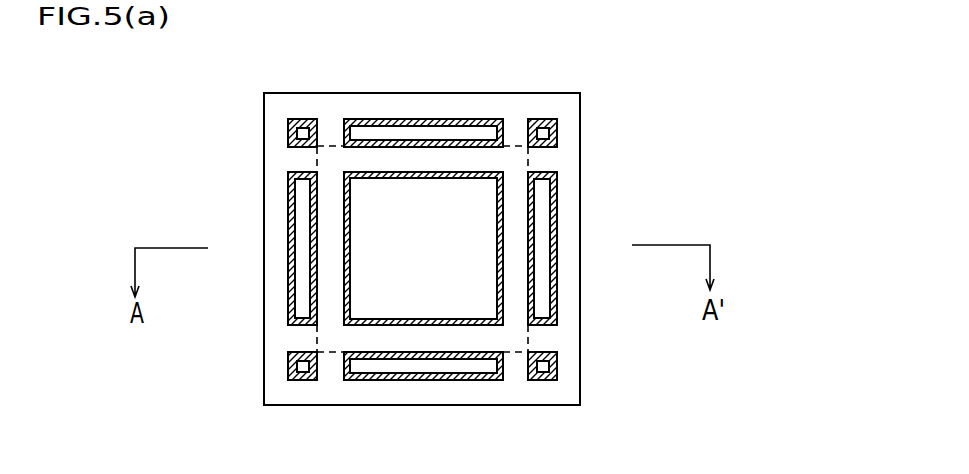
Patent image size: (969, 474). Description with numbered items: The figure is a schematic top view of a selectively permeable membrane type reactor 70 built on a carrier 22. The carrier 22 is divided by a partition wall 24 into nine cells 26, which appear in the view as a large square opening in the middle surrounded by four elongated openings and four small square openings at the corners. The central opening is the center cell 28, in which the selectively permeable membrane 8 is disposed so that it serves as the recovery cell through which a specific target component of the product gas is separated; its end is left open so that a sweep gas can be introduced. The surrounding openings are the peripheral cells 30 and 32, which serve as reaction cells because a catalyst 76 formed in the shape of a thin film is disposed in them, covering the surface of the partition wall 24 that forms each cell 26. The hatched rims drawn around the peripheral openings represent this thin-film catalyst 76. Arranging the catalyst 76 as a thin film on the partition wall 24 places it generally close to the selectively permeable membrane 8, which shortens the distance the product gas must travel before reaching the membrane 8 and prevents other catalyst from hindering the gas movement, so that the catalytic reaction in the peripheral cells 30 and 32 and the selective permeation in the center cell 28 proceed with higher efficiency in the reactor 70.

The selectively permeable membrane 8 is at (500, 265).
The carrier 22 is at (490, 106).
The partition wall 24 is at (335, 146).
The cell 26 is at (413, 254).
The center cell 28 is at (407, 264).
The peripheral cell 30 is at (287, 245).
The peripheral cell 32 is at (559, 127).
The selectively permeable membrane type reactor 70 is at (628, 164).
The catalyst 76 is at (300, 118).